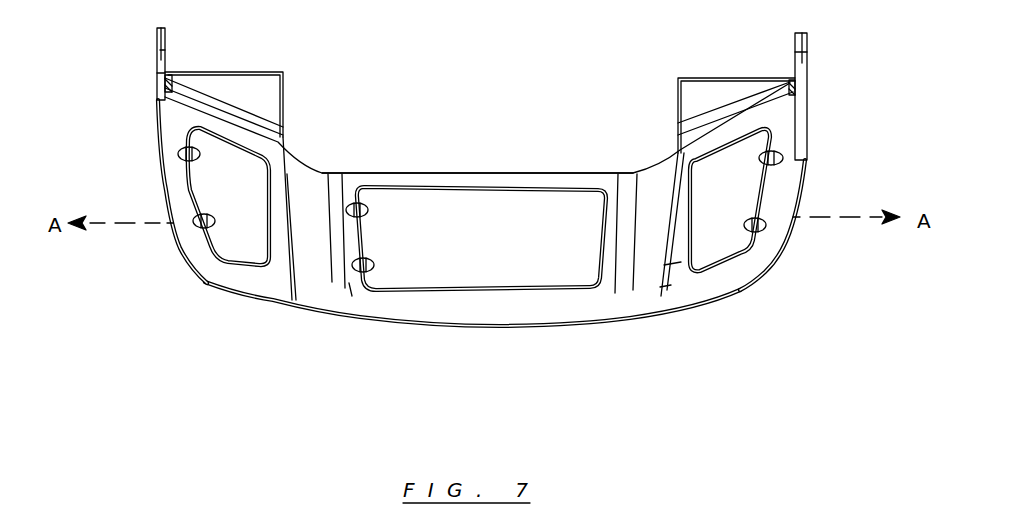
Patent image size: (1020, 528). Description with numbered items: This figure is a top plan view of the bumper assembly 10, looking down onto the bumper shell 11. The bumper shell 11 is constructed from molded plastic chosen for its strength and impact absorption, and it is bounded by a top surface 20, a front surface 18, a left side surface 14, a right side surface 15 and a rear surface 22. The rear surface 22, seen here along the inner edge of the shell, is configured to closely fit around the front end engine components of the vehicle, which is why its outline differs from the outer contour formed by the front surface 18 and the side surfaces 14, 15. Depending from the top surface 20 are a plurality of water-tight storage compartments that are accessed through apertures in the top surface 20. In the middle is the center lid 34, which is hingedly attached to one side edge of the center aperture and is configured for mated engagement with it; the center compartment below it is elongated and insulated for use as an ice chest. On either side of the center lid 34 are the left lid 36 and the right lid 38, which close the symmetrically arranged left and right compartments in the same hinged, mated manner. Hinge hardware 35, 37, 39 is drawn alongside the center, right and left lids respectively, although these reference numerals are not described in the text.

The bumper assembly 10 is at (233, 372).
The bumper shell 11 is at (461, 320).
The left side surface 14 is at (798, 152).
The right side surface 15 is at (160, 145).
The front surface 18 is at (577, 323).
The top surface 20 is at (297, 215).
The rear surface 22 is at (402, 173).
The center lid 34 is at (532, 233).
The center hinge fastener 35 is at (351, 203).
The left lid 36 is at (730, 187).
The right hinge fastener 37 is at (757, 228).
The right lid 38 is at (243, 213).
The left hinge fastener 39 is at (188, 154).